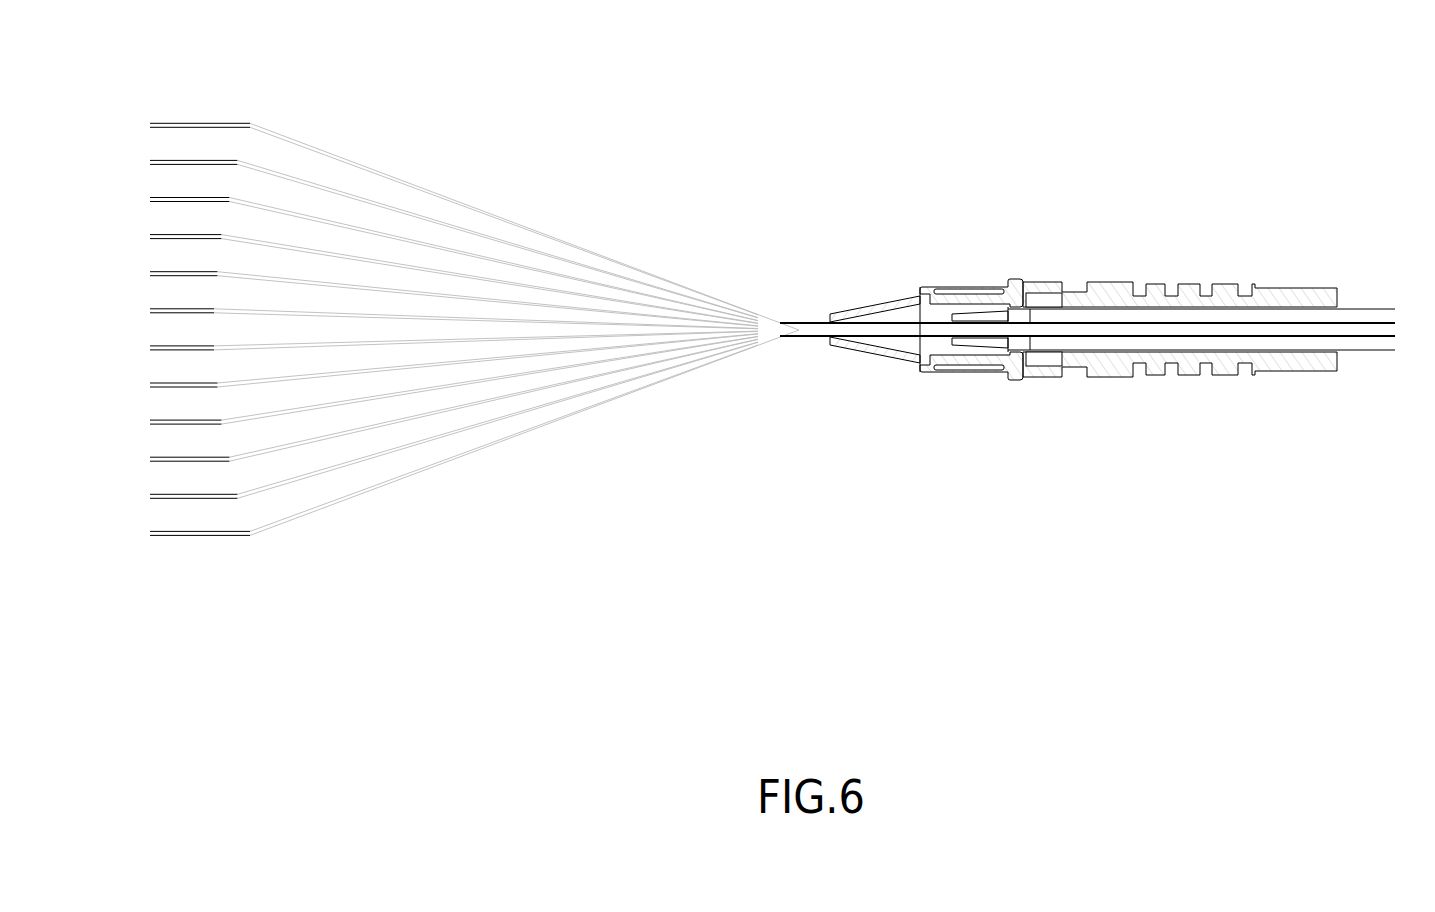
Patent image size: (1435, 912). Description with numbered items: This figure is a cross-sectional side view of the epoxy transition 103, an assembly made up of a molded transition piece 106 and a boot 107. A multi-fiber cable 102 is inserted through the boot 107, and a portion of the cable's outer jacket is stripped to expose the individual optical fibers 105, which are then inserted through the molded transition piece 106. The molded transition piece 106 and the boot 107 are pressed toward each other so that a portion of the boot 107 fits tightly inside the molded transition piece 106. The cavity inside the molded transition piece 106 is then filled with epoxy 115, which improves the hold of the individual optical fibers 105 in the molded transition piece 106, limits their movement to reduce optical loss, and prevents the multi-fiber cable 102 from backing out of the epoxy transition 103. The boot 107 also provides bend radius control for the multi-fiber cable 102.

The multi-fiber cable 102 is at (1372, 351).
The epoxy transition 103 is at (1280, 104).
The individual optical fibers 105 is at (597, 253).
The molded transition piece 106 is at (980, 287).
The boot 107 is at (1220, 285).
The epoxy 115 is at (935, 312).